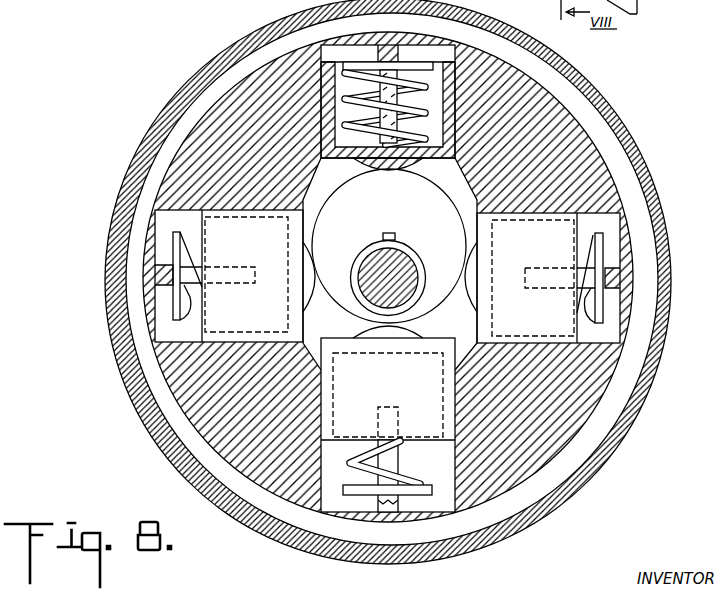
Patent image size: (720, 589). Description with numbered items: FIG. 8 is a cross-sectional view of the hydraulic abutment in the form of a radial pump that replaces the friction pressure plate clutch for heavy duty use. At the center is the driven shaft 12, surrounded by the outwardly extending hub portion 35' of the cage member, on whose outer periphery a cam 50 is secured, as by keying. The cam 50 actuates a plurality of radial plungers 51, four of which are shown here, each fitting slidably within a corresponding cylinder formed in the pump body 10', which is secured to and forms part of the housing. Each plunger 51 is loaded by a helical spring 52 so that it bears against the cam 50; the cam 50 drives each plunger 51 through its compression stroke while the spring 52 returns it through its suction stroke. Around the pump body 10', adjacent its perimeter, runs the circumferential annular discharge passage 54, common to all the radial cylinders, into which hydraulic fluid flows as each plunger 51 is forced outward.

The pump body 10' is at (399, 282).
The discharge passage 54 is at (562, 84).
The helical spring 52 is at (411, 97).
The radial plunger 51 is at (451, 132).
The cam 50 is at (417, 206).
The hub portion 35' is at (379, 263).
The driven shaft 12 is at (405, 263).